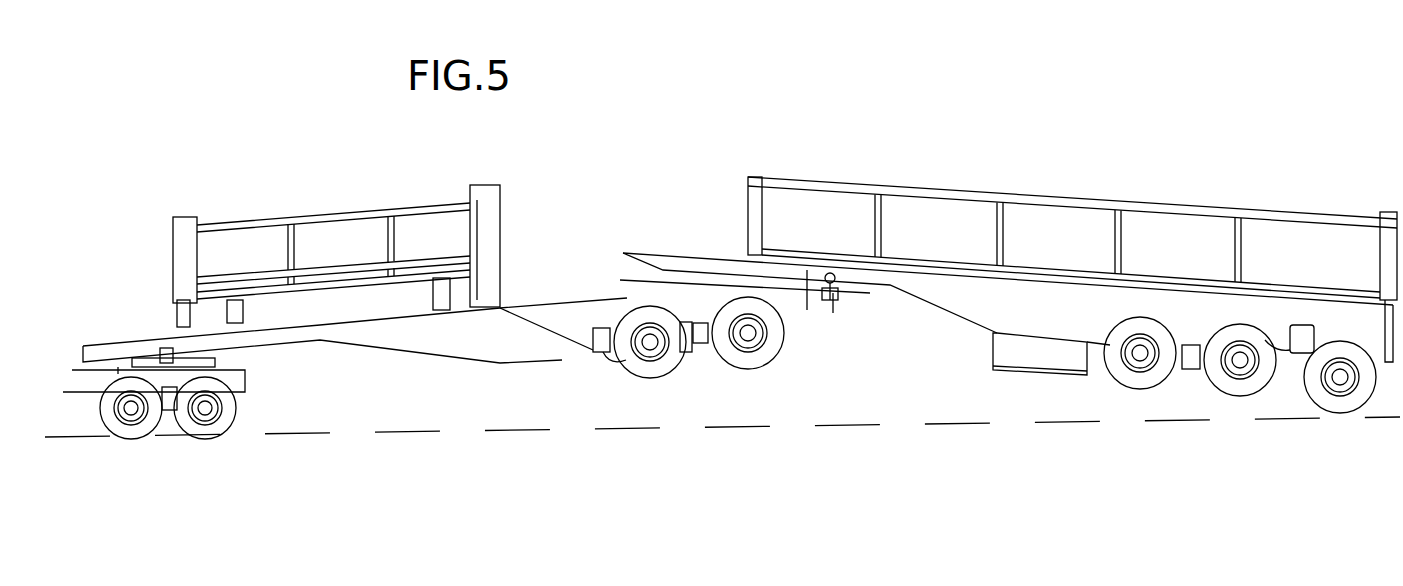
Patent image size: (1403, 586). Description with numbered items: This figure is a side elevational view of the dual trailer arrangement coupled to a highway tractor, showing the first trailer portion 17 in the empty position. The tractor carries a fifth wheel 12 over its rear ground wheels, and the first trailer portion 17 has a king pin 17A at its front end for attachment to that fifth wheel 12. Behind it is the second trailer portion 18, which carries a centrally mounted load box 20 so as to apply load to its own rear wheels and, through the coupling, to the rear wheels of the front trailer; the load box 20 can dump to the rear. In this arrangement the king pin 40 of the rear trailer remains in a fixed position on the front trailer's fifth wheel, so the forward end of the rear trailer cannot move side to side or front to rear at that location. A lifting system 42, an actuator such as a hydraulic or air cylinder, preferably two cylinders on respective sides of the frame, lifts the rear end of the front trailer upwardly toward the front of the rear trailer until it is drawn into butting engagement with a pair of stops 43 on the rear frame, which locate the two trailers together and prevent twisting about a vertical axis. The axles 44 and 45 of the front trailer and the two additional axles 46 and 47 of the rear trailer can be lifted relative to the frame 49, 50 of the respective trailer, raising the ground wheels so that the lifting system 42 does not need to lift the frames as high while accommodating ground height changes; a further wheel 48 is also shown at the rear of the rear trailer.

The fifth wheel 12 is at (135, 355).
The first trailer portion 17 is at (577, 238).
The king pin 17A is at (158, 352).
The second trailer portion 18 is at (1053, 188).
The load box 20 is at (1168, 200).
The king pin 40 is at (683, 237).
The lifting system 42 is at (847, 290).
The stops 43 is at (807, 283).
The axle 44 is at (653, 357).
The axle 45 is at (752, 337).
The axle 46 is at (1140, 357).
The axle 47 is at (1240, 363).
The trailer wheel 48 is at (1340, 380).
The frame 49 is at (560, 347).
The frame 50 is at (1067, 330).